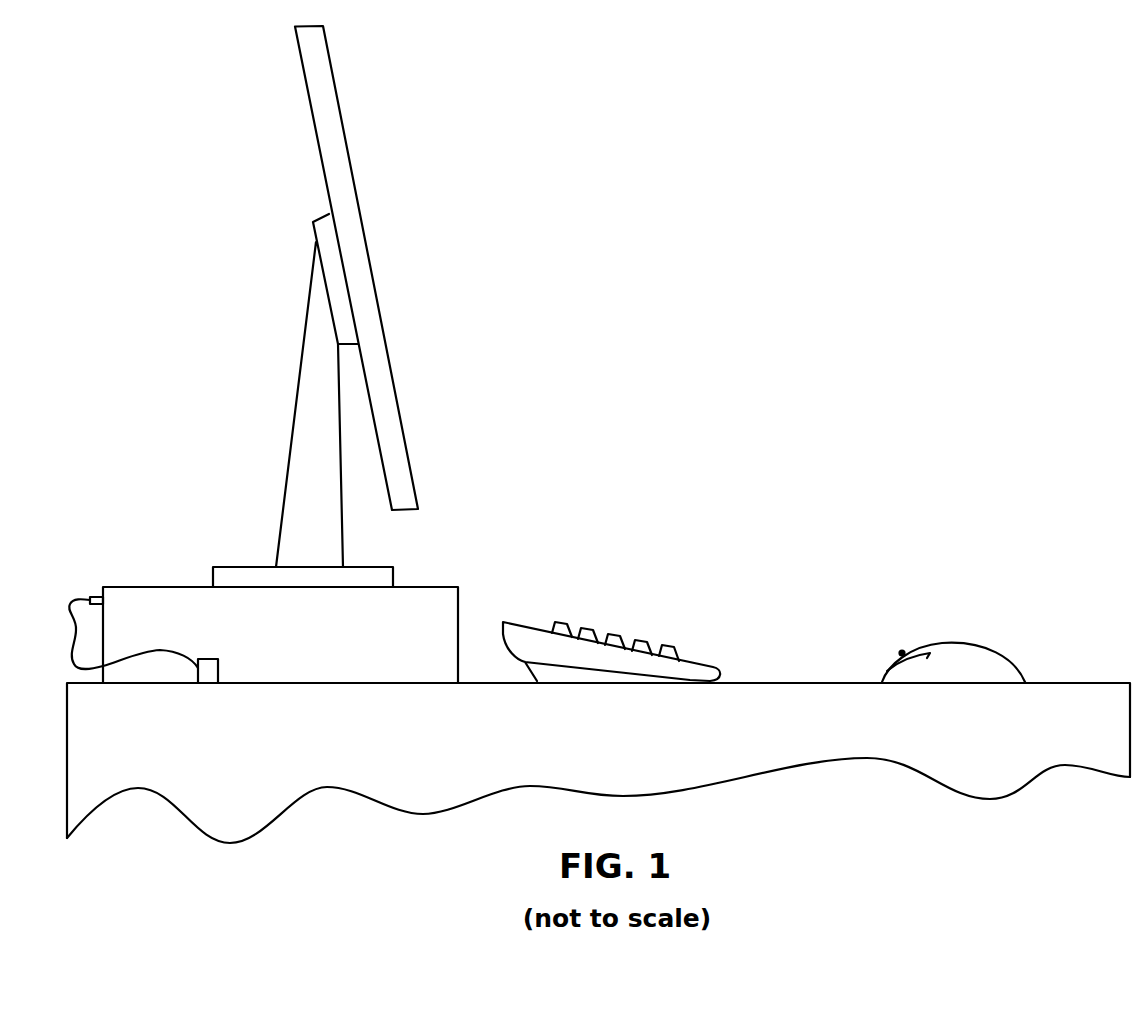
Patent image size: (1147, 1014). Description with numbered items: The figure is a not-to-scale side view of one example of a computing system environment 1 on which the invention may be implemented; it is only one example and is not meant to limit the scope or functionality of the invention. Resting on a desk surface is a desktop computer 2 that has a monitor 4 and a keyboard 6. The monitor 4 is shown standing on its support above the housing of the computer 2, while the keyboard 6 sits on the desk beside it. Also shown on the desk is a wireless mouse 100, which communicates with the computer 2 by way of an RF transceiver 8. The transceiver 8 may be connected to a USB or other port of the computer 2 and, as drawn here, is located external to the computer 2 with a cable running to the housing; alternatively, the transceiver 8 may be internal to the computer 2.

The computing system environment 1 is at (655, 246).
The desktop computer 2 is at (442, 585).
The monitor 4 is at (362, 221).
The keyboard 6 is at (692, 662).
The RF transceiver 8 is at (197, 657).
The wireless mouse 100 is at (948, 642).